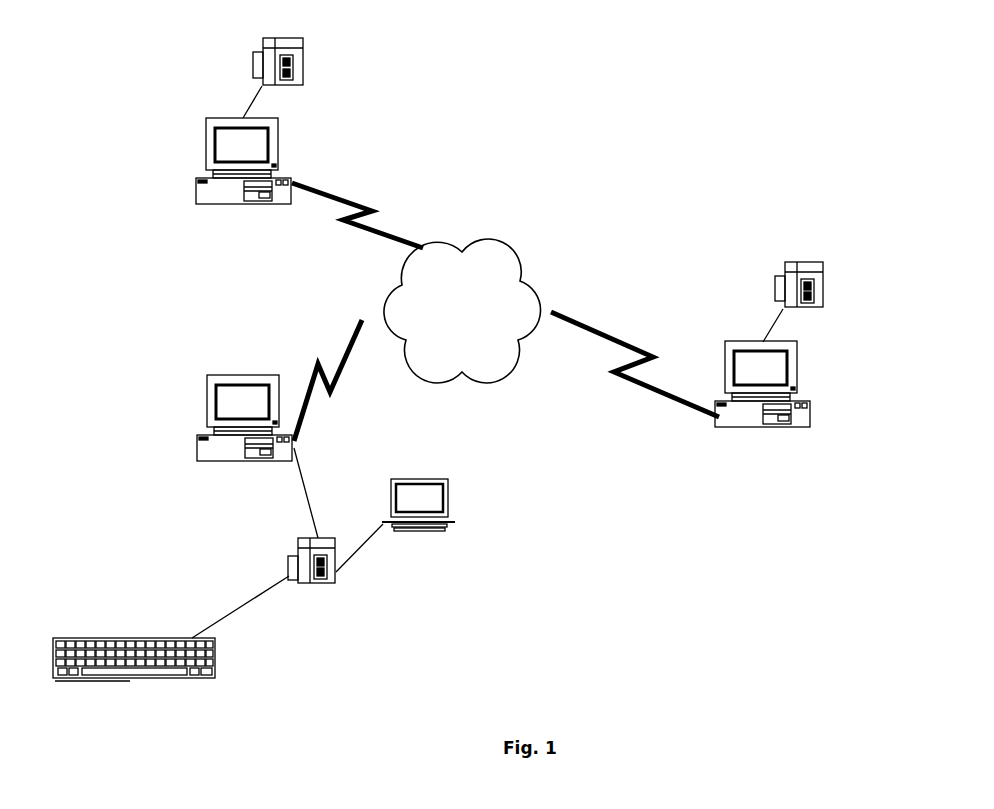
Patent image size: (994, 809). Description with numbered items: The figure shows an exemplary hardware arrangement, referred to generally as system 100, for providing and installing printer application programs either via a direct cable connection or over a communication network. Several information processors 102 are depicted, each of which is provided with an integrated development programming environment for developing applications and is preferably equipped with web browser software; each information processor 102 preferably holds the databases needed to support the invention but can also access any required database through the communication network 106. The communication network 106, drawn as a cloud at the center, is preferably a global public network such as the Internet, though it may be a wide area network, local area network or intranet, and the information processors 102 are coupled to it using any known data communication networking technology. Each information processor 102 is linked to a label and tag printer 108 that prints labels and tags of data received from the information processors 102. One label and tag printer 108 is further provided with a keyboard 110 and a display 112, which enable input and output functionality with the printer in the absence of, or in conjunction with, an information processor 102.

The system 100 is at (808, 170).
The information processor 102 is at (207, 177).
The communication network 106 is at (392, 282).
The label and tag printer 108 is at (264, 52).
The keyboard 110 is at (85, 638).
The display 112 is at (452, 490).